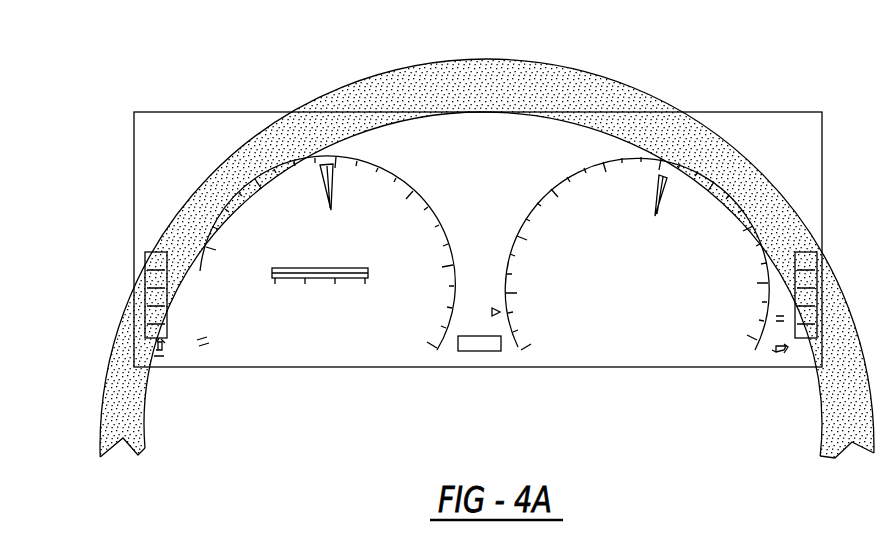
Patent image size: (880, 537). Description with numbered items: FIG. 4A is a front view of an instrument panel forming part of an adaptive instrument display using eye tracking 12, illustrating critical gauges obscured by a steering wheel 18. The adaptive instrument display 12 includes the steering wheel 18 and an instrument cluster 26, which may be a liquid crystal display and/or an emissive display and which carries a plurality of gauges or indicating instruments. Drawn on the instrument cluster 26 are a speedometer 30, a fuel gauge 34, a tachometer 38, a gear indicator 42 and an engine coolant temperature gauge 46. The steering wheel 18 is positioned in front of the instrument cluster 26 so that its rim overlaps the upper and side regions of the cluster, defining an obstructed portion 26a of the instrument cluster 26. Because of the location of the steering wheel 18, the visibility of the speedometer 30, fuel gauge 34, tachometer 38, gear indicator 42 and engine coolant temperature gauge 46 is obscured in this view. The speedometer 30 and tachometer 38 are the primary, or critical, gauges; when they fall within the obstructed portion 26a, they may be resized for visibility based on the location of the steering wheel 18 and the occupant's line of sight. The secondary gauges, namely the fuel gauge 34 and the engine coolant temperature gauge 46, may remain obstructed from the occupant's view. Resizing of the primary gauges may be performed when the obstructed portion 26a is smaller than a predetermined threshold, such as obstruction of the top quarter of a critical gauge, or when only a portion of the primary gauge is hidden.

The adaptive instrument display using eye tracking 12 is at (188, 125).
The steering wheel 18 is at (592, 72).
The instrument cluster 26 is at (793, 118).
The obstructed portion 26a is at (258, 175).
The engine coolant temperature gauge 46 is at (150, 250).
The tachometer 38 is at (258, 340).
The speedometer 30 is at (697, 332).
The fuel gauge 34 is at (794, 368).
The gear indicator 42 is at (480, 352).